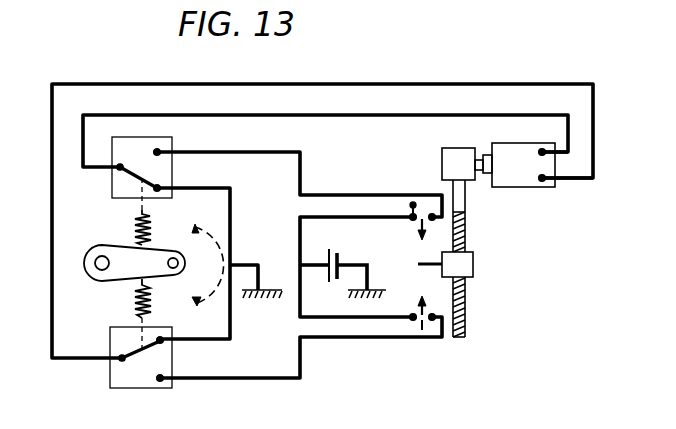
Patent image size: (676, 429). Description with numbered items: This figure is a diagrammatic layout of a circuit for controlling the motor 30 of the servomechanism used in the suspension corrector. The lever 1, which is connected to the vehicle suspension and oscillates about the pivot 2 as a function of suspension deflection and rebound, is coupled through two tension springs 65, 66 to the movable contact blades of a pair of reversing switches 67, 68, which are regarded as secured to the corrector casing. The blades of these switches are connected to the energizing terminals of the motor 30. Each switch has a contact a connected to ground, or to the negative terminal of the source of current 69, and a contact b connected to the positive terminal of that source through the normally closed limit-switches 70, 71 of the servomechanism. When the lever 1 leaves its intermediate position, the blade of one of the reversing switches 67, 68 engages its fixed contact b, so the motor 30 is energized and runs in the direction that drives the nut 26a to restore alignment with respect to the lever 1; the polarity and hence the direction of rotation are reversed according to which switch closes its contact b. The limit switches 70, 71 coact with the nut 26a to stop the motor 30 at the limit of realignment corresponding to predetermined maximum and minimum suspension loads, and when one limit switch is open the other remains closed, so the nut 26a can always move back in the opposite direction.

The reversing switch 68 is at (122, 151).
The reversing switch 67 is at (133, 384).
The contact a is at (157, 192).
The contact b is at (160, 148).
The tension spring 66 is at (134, 238).
The tension spring 65 is at (133, 299).
The pivot 2 is at (96, 262).
The lever 1 is at (158, 276).
The source of current 69 is at (338, 262).
The limit-switch 71 is at (413, 203).
The limit-switch 70 is at (422, 331).
The motor 30 is at (526, 178).
The nut 26a is at (468, 265).